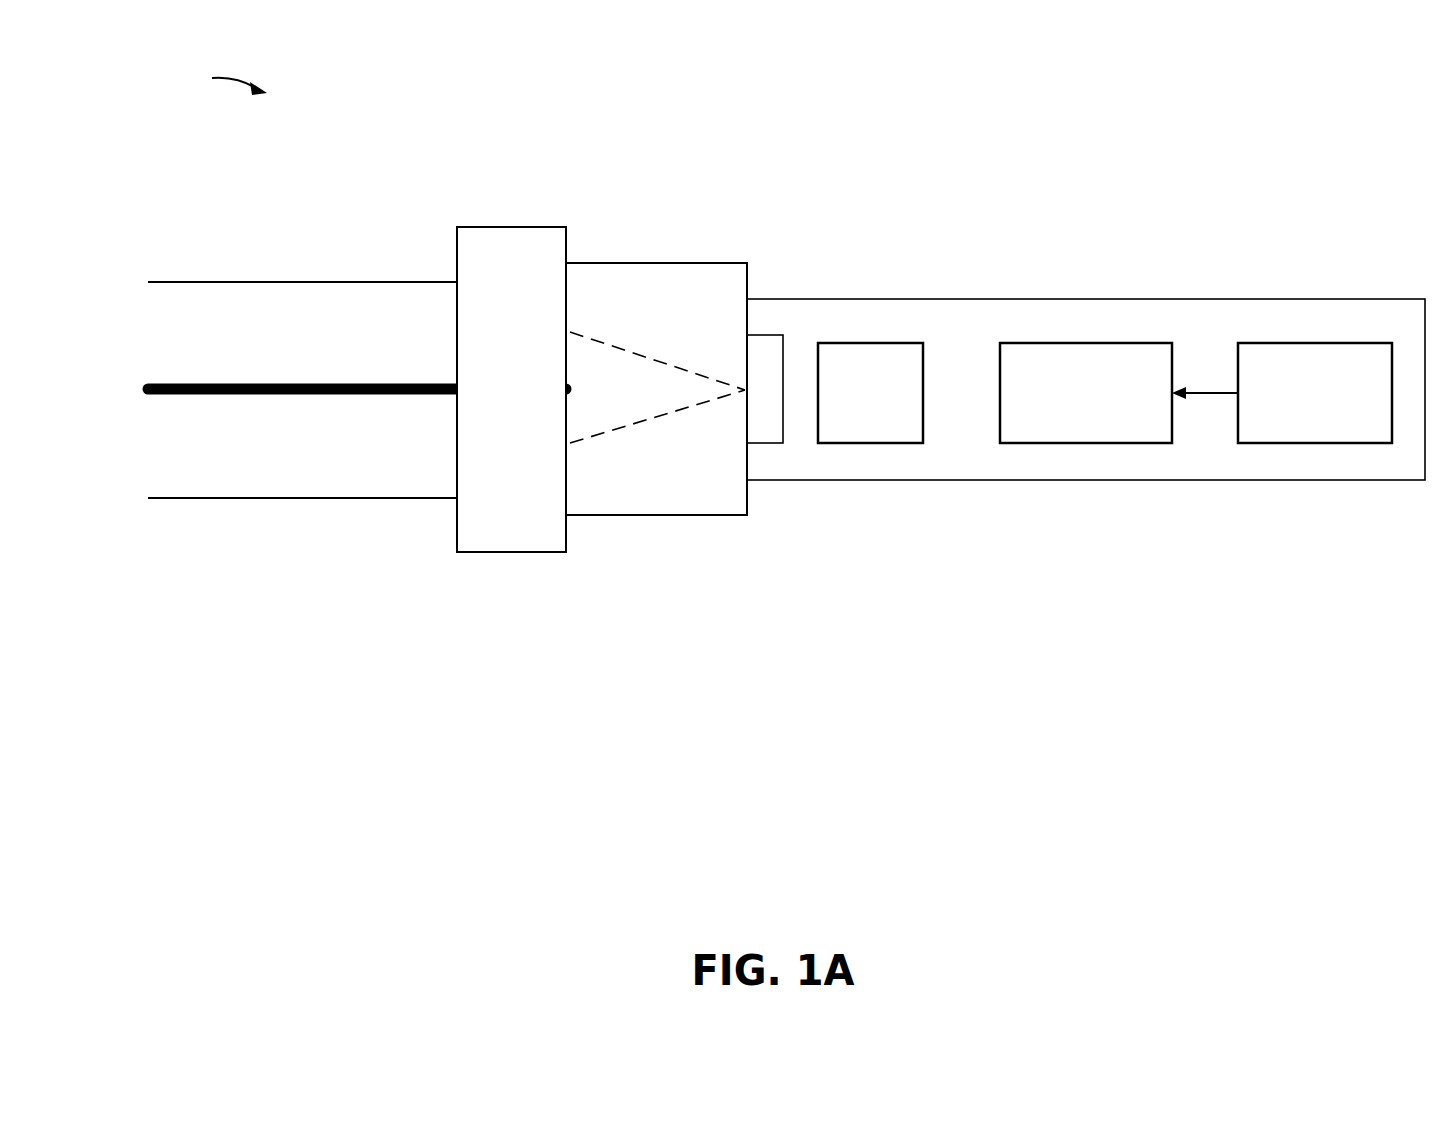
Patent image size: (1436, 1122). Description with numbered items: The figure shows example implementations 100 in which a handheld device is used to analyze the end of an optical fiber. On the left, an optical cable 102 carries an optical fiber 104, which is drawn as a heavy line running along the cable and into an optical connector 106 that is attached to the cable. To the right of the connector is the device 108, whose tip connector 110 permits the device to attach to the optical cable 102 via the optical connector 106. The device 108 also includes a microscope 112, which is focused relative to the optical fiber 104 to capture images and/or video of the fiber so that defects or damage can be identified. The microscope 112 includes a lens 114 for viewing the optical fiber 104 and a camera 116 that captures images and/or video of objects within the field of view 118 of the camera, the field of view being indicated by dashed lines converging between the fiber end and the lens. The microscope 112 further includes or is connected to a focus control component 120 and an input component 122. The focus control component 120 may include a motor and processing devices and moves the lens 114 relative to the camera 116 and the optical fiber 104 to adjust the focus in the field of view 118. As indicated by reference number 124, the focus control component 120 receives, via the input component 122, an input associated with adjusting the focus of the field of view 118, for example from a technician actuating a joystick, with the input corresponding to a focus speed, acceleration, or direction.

The example implementations 100 is at (212, 80).
The optical cable 102 is at (288, 282).
The optical fiber 104 is at (303, 396).
The optical connector 106 is at (504, 227).
The device 108 is at (574, 752).
The tip connector 110 is at (695, 263).
The microscope 112 is at (748, 633).
The lens 114 is at (765, 444).
The camera 116 is at (870, 393).
The field of view 118 is at (658, 417).
The focus control component 120 is at (1086, 393).
The input component 122 is at (1282, 393).
The receive an input associated with adjusting a focus of field of view 124 is at (1208, 395).